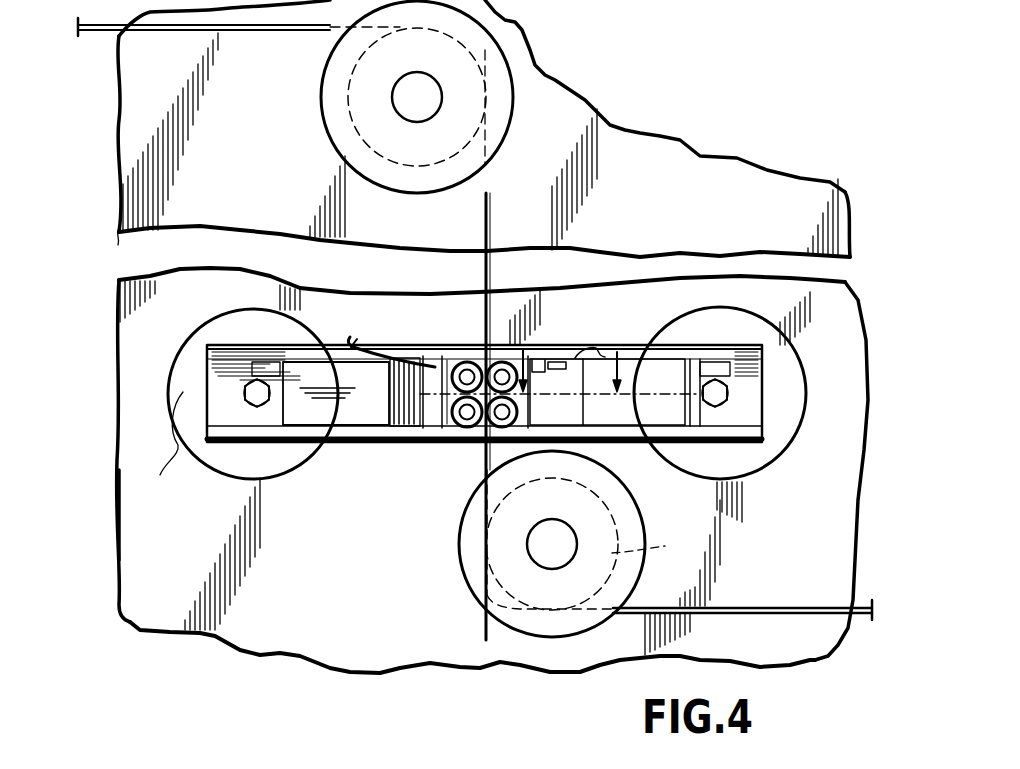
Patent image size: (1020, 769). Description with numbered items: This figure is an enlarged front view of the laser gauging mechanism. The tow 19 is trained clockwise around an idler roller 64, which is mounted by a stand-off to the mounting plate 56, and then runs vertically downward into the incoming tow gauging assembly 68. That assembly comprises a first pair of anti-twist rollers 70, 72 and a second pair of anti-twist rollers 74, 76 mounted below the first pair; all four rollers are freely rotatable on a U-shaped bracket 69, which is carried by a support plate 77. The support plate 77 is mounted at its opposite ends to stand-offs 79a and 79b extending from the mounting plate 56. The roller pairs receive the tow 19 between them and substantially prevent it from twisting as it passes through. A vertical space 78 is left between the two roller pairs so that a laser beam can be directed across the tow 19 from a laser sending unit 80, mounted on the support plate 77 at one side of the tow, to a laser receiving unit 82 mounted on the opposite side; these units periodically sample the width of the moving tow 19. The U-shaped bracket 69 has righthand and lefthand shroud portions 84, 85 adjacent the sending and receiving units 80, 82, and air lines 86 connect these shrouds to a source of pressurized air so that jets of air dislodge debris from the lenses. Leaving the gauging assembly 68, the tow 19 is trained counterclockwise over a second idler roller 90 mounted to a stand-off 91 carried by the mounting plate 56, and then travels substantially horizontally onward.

The tow 19 is at (104, 30).
The mounting plate 56 is at (136, 238).
The idler roller 64 is at (502, 60).
The incoming tow gauging assembly 68 is at (352, 478).
The U-shaped bracket 69 is at (437, 441).
The anti-twist roller 70 is at (468, 362).
The anti-twist roller 72 is at (512, 360).
The anti-twist roller 74 is at (468, 438).
The anti-twist roller 76 is at (505, 430).
The support plate 77 is at (152, 515).
The vertical space 78 is at (336, 393).
The stand-off 79a is at (217, 436).
The stand-off 79b is at (790, 386).
The laser sending unit 80 is at (676, 346).
The laser receiving unit 82 is at (330, 427).
The righthand shroud portion 84 is at (598, 432).
The lefthand shroud portion 85 is at (395, 440).
The air lines 86 is at (355, 345).
The second idler roller 90 is at (482, 598).
The stand-off 91 is at (662, 550).